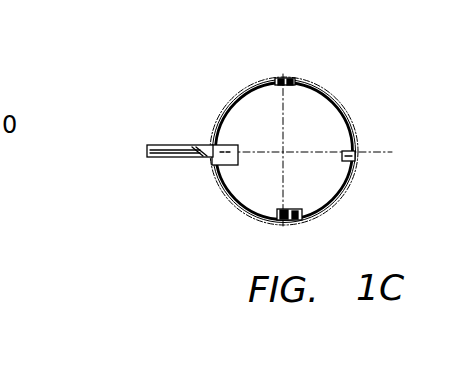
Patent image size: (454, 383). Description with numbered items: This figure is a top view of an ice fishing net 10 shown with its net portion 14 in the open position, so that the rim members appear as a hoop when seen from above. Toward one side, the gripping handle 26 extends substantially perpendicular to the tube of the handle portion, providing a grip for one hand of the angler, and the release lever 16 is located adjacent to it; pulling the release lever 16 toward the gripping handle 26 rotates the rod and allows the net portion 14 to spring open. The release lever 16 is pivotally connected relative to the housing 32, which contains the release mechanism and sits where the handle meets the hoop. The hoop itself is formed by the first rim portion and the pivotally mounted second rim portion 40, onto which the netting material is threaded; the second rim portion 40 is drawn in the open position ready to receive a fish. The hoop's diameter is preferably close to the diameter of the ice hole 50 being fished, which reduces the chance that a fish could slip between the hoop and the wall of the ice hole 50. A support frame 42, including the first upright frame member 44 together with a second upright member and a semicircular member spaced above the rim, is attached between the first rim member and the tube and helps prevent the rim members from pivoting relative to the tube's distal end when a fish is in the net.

The ice fishing net 10 is at (216, 64).
The net portion 14 is at (350, 117).
The release lever 16 is at (185, 160).
The gripping handle 26 is at (152, 160).
The housing 32 is at (238, 153).
The second rim portion 40 is at (333, 88).
The support frame 42 is at (233, 203).
The first upright frame member 44 is at (285, 81).
The ice hole 50 is at (350, 188).